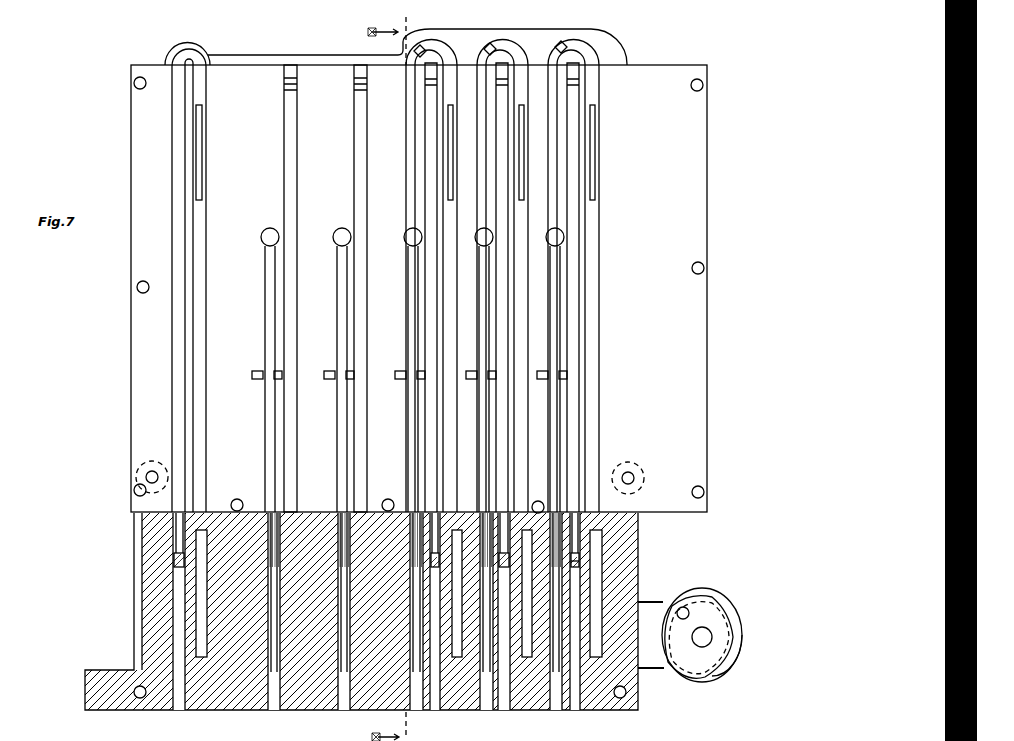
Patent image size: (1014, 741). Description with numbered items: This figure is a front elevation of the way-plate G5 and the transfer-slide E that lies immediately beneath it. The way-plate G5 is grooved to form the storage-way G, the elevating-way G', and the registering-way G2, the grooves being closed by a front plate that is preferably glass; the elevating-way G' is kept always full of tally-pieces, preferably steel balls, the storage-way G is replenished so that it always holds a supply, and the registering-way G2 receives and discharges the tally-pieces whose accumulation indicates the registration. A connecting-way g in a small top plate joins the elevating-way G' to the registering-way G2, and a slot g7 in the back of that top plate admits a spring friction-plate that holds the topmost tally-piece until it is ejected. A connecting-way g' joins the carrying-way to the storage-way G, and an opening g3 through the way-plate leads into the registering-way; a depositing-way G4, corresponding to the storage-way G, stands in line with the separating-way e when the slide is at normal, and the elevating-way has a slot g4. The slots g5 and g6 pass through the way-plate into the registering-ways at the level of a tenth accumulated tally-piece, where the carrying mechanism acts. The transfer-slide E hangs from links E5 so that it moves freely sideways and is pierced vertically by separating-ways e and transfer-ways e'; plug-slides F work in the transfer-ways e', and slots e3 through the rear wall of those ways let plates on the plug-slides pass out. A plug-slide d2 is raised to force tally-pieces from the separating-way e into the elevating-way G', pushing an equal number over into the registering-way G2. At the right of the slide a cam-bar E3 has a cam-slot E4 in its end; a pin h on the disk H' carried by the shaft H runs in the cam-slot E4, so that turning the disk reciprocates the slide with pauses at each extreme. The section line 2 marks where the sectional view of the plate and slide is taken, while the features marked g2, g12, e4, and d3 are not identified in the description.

The section line 2 is at (388, 372).
The connecting-way g is at (506, 275).
The connecting-way g' is at (450, 287).
The loop g2 is at (205, 62).
The opening g3 is at (263, 231).
The slot g4 is at (202, 150).
The slot g5 is at (283, 374).
The slot g6 is at (260, 380).
The slot g7 is at (426, 50).
The screw g12 is at (704, 268).
The storage-way G is at (455, 288).
The elevating-way G' is at (427, 270).
The registering-way G2 is at (265, 302).
The depositing-way G4 is at (172, 232).
The way-plate G5 is at (419, 288).
The plug-slide F is at (266, 511).
The transfer-slide E is at (318, 710).
The cam-bar E3 is at (645, 606).
The cam-slot E4 is at (703, 610).
The links E5 is at (133, 622).
The separating-way e is at (376, 621).
The transfer-way e' is at (414, 621).
The slot e3 is at (415, 602).
The slot e4 is at (394, 593).
The plug-slide d2 is at (580, 530).
The key d3 is at (582, 561).
The shaft H is at (702, 648).
The disk H' is at (717, 635).
The pin h is at (683, 620).